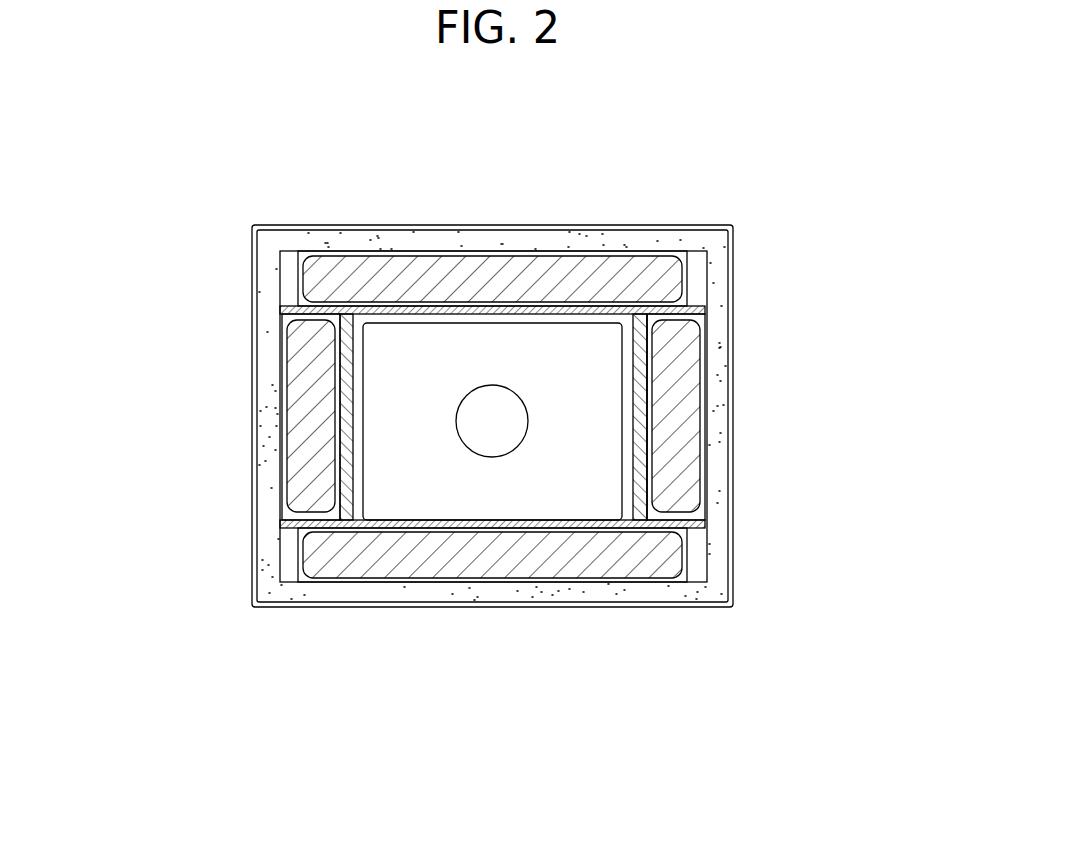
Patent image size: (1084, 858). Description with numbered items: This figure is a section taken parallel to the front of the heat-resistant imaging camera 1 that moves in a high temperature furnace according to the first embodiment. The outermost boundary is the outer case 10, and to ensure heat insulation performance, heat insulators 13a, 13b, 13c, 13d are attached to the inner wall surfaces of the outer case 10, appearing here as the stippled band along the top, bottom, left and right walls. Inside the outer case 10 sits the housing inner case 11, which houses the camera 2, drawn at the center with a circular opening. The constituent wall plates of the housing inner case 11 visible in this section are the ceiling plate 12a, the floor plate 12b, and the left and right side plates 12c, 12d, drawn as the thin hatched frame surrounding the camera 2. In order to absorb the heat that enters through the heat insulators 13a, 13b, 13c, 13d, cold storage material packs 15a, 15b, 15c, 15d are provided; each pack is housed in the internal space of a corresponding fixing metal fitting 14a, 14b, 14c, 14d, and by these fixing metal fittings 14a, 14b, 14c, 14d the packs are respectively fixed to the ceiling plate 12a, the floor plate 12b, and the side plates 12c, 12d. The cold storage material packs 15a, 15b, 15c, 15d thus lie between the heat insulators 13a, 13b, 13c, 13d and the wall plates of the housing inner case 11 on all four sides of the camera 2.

The heat-resistant imaging camera 1 is at (492, 386).
The camera 2 is at (437, 529).
The outer case 10 is at (583, 370).
The housing inner case 11 is at (770, 403).
The ceiling plate 12a is at (493, 224).
The floor plate 12b is at (492, 614).
The left side plate 12c is at (207, 417).
The right side plate 12d is at (777, 417).
The heat insulator 13a is at (516, 191).
The heat insulator 13b is at (495, 655).
The heat insulator 13c is at (173, 423).
The heat insulator 13d is at (824, 408).
The fixing metal fitting 14a is at (492, 220).
The fixing metal fitting 14b is at (492, 630).
The fixing metal fitting 14c is at (206, 417).
The fixing metal fitting 14d is at (784, 418).
The cold storage material pack 15a is at (492, 225).
The cold storage material pack 15b is at (492, 632).
The cold storage material pack 15c is at (213, 450).
The cold storage material pack 15d is at (779, 450).